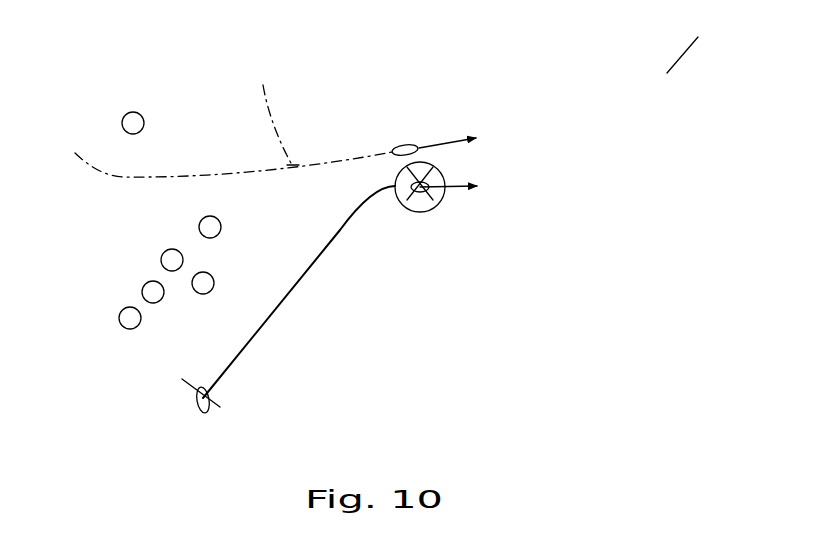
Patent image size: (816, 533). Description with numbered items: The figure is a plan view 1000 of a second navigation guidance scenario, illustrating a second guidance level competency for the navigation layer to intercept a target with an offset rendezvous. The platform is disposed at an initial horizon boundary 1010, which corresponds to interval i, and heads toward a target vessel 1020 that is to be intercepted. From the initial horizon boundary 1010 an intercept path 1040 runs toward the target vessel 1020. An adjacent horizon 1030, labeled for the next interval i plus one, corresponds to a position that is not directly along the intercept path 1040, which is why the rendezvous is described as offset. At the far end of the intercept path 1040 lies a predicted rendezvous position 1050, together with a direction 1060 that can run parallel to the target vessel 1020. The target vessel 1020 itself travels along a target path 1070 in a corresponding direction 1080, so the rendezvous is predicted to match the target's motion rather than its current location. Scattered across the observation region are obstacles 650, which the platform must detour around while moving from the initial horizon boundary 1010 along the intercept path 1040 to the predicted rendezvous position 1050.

The plan view 1000 is at (128, 69).
The initial horizon boundary 1010 is at (212, 400).
The target vessel 1020 is at (407, 144).
The adjacent horizon 1030 is at (680, 58).
The intercept path 1040 is at (300, 278).
The predicted rendezvous position 1050 is at (418, 213).
The direction 1060 is at (476, 182).
The target path 1070 is at (233, 117).
The direction 1080 is at (475, 139).
The obstacles 650 is at (160, 259).